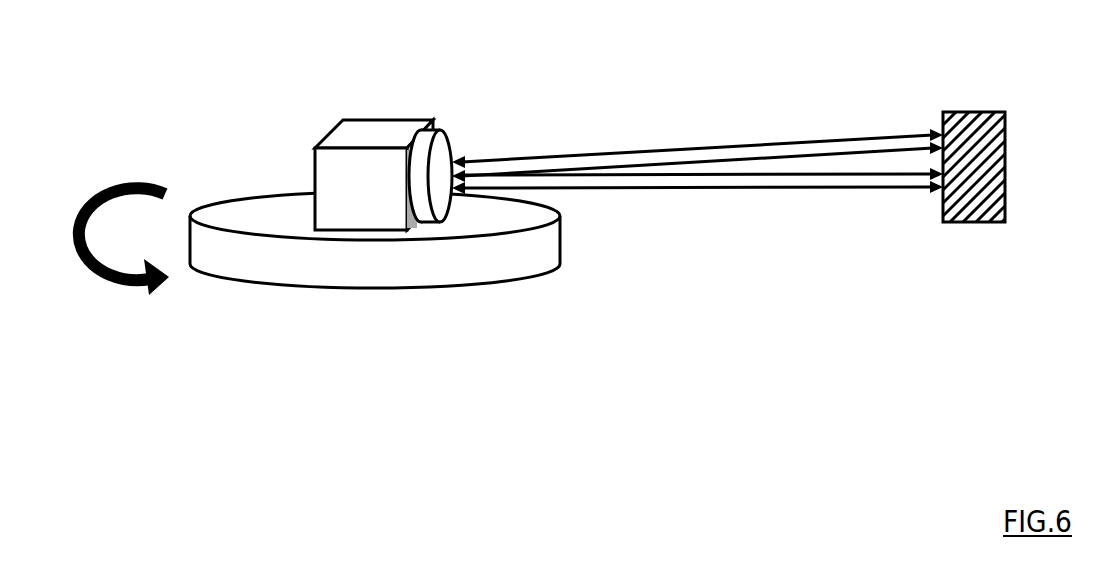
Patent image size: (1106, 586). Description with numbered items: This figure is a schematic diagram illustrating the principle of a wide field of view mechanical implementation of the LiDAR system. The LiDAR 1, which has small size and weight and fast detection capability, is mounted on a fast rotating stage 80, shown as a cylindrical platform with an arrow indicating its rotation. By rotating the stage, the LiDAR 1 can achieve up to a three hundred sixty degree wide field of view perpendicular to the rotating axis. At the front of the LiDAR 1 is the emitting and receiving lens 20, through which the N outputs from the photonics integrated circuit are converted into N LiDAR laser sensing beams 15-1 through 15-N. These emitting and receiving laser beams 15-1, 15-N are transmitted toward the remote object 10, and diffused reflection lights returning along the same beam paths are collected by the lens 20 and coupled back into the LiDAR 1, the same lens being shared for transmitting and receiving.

The LiDAR 1 is at (362, 130).
The lens system 20 is at (452, 143).
The LiDAR laser sensing beam 15-1 is at (758, 142).
The LiDAR laser sensing beam 15-N is at (825, 172).
The remote object 10 is at (988, 112).
The rotating stage 80 is at (278, 272).